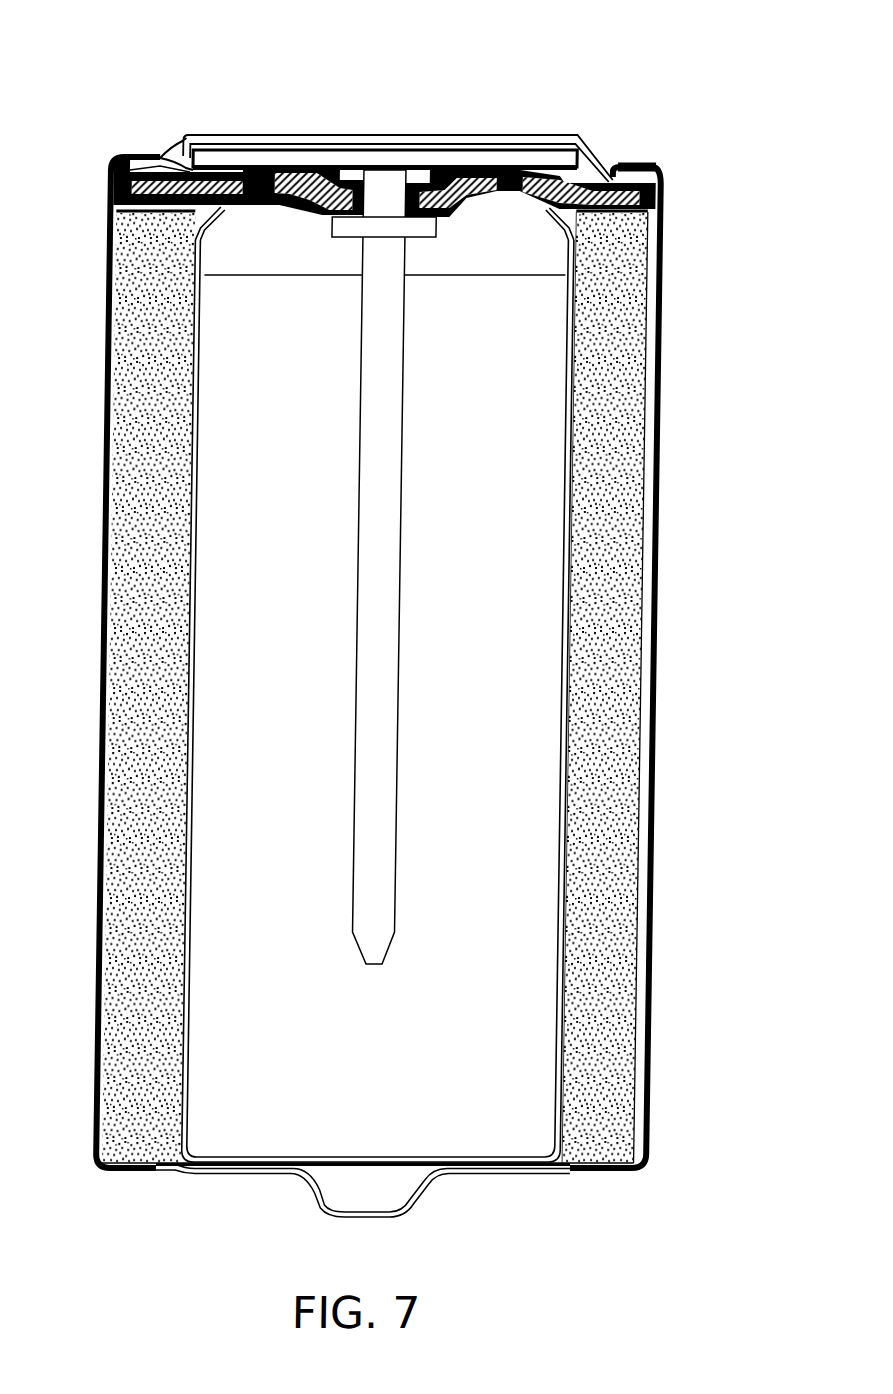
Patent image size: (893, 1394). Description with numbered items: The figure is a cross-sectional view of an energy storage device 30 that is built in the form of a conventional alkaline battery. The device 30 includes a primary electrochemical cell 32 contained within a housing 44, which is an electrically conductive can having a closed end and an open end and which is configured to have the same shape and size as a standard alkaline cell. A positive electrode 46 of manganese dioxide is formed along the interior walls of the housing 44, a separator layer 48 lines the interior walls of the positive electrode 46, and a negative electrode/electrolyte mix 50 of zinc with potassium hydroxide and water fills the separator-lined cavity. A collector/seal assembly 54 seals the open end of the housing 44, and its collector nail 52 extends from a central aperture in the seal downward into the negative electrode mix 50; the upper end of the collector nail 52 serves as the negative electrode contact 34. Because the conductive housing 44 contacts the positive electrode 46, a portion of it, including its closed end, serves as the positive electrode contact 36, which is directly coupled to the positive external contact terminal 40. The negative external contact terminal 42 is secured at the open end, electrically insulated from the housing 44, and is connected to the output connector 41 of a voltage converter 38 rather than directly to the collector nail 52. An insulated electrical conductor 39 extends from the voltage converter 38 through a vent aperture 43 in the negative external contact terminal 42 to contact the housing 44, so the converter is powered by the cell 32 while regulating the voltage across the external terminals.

The energy storage device 30 is at (336, 40).
The primary electrochemical cell 32 is at (650, 510).
The negative electrode contact 34 is at (372, 142).
The positive electrode contact 36 is at (498, 1172).
The voltage converter 38 is at (508, 142).
The electrical conductor 39 is at (180, 152).
The positive external contact terminal 40 is at (427, 1218).
The voltage converter output connector 41 is at (400, 138).
The negative external contact terminal 42 is at (240, 150).
The vent aperture 43 is at (167, 156).
The housing 44 is at (664, 734).
The positive electrode 46 is at (633, 857).
The separator layer 48 is at (580, 663).
The negative electrode/electrolyte mix 50 is at (549, 622).
The collector nail 52 is at (397, 920).
The collector/seal assembly 54 is at (657, 179).